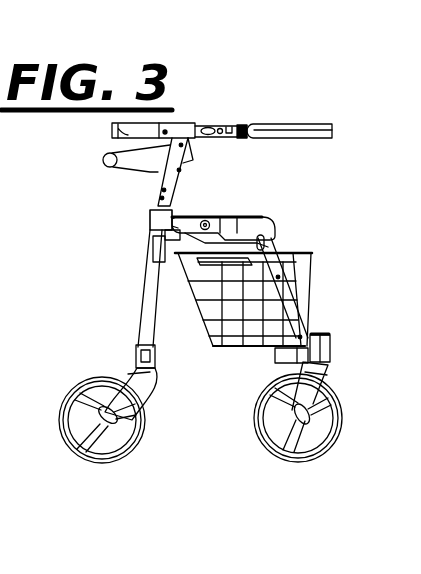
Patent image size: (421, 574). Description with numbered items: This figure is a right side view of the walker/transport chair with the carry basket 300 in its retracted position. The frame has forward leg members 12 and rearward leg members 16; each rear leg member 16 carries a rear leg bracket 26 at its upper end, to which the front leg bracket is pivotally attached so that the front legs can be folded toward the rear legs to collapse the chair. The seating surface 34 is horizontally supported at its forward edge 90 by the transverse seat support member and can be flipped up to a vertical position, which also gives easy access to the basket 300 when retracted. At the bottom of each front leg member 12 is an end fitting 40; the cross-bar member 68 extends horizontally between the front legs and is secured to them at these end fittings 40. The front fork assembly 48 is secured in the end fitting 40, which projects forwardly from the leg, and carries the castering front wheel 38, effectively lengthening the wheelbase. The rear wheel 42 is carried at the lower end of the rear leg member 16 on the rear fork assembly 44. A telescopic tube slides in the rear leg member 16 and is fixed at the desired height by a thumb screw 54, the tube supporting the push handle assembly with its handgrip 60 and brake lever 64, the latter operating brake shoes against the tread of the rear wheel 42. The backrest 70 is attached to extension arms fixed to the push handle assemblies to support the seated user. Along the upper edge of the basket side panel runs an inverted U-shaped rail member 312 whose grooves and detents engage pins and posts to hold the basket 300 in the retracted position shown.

The forward leg member 12 is at (301, 308).
The rearward leg member 16 is at (145, 300).
The rear leg bracket 26 is at (152, 246).
The seating surface 34 is at (232, 216).
The front wheel 38 is at (345, 405).
The end fitting 40 is at (330, 346).
The rear wheel 42 is at (144, 425).
The rear fork assembly 44 is at (132, 396).
The front fork assembly 48 is at (322, 380).
The thumb screw 54 is at (150, 221).
The handgrip 60 is at (112, 137).
The brake lever 64 is at (134, 168).
The cross-bar member 68 is at (275, 364).
The backrest 70 is at (336, 130).
The forward edge 90 is at (280, 222).
The carry basket 300 is at (319, 270).
The rail member 312 is at (268, 245).